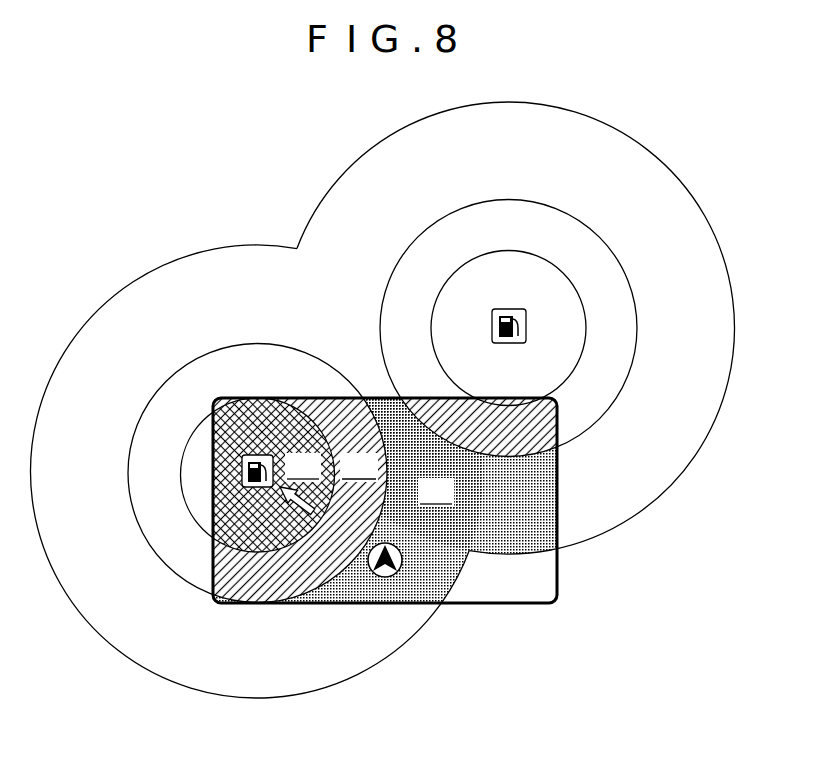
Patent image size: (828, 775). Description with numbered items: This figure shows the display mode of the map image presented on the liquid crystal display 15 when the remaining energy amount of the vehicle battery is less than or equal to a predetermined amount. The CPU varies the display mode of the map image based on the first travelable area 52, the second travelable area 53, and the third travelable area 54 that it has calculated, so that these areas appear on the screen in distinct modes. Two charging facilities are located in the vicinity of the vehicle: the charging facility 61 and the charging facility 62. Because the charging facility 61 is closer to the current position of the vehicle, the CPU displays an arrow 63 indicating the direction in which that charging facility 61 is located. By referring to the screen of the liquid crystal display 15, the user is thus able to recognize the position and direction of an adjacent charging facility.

The liquid crystal display 15 is at (382, 400).
The first travelable area 52 is at (383, 400).
The second travelable area 53 is at (382, 401).
The third travelable area 54 is at (258, 475).
The charging facility 61 is at (252, 455).
The charging facility 62 is at (517, 341).
The arrow 63 is at (302, 506).